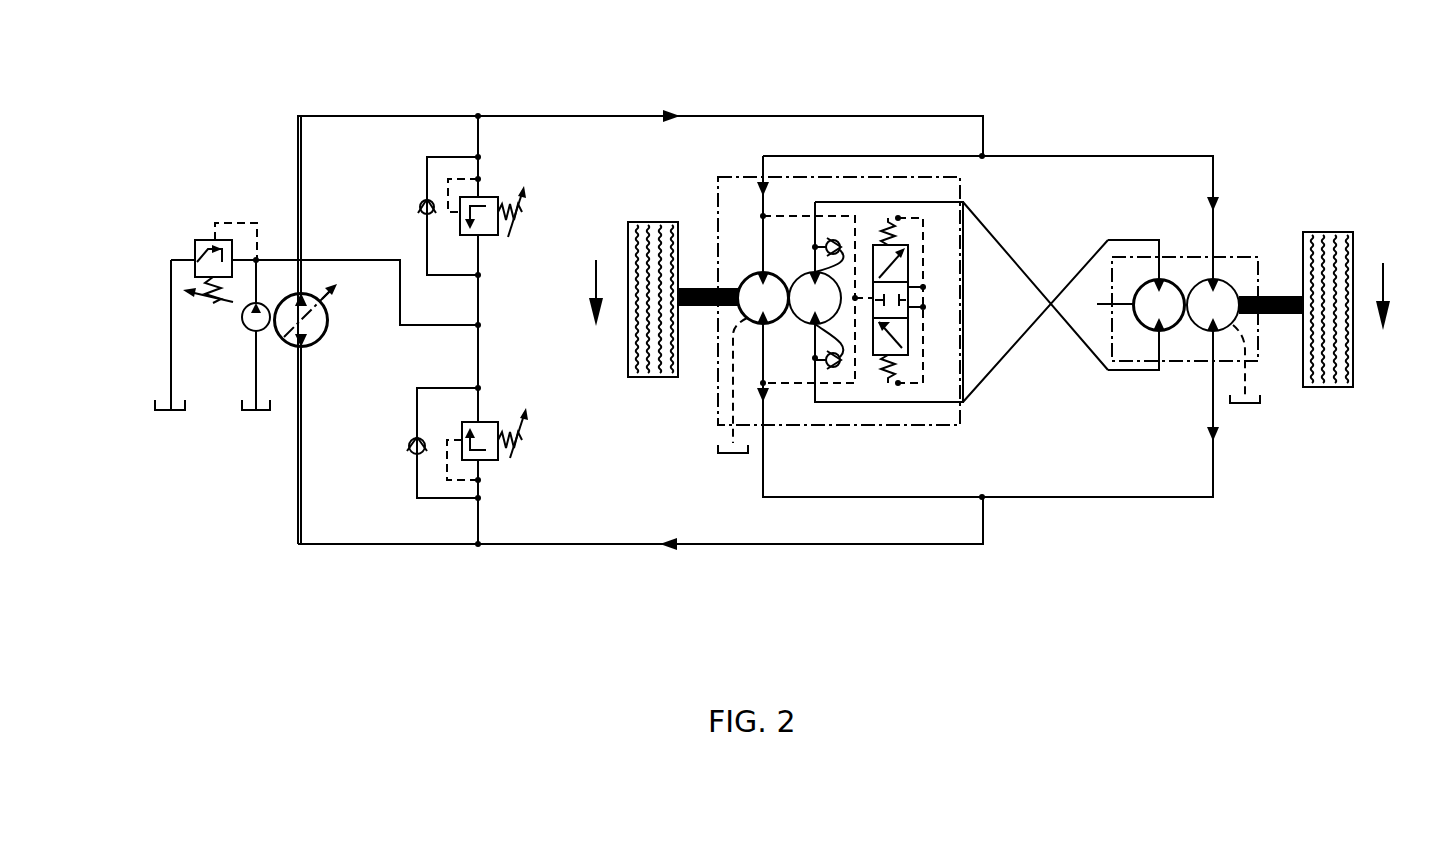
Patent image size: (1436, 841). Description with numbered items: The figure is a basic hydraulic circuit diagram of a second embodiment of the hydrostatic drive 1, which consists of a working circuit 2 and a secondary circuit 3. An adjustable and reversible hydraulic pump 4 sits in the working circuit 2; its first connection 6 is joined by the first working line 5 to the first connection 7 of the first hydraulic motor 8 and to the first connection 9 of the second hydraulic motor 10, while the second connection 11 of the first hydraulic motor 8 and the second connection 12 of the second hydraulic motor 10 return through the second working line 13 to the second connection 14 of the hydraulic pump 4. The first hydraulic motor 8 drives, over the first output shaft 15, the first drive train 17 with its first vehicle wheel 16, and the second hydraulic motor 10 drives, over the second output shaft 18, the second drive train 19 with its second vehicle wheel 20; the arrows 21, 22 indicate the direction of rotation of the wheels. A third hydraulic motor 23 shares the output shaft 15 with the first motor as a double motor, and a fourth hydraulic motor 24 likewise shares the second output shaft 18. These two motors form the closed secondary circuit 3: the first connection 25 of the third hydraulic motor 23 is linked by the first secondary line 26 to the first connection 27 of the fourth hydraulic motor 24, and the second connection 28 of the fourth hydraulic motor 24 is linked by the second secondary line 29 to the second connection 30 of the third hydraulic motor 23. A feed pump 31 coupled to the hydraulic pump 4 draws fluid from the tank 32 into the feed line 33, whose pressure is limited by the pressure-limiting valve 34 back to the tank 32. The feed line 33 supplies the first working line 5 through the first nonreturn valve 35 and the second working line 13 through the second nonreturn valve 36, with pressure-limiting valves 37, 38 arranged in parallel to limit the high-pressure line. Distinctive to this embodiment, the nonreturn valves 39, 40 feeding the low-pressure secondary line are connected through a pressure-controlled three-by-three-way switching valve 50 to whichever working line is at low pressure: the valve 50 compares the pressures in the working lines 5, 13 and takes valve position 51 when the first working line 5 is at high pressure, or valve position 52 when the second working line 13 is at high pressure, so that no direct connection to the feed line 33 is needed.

The hydrostatic drive 1 is at (711, 92).
The working circuit 2 is at (433, 108).
The secondary circuit 3 is at (1046, 247).
The hydraulic pump 4 is at (320, 327).
The first working line 5 is at (828, 115).
The first connection of the hydraulic pump 6 is at (300, 290).
The first connection of the first hydraulic motor 7 is at (762, 272).
The first hydraulic motor 8 is at (752, 302).
The first connection of the second hydraulic motor 9 is at (1215, 296).
The second hydraulic motor 10 is at (1218, 298).
The second connection of the first hydraulic motor 11 is at (767, 327).
The second connection of the second hydraulic motor 12 is at (1212, 333).
The second working line 13 is at (752, 547).
The second connection of the hydraulic pump 14 is at (300, 348).
The first output shaft 15 is at (698, 287).
The first vehicle wheel 16 is at (660, 222).
The first drive train 17 is at (632, 205).
The second output shaft 18 is at (1278, 317).
The second drive train 19 is at (1343, 210).
The second vehicle wheel 20 is at (1315, 242).
The arrow 21 is at (595, 282).
The arrow 22 is at (1383, 290).
The third hydraulic motor 23 is at (807, 292).
The fourth hydraulic motor 24 is at (1105, 305).
The first connection of the third hydraulic motor 25 is at (853, 248).
The first secondary line 26 is at (1132, 373).
The first connection of the fourth hydraulic motor 27 is at (1158, 328).
The second connection of the fourth hydraulic motor 28 is at (1160, 270).
The second secondary line 29 is at (1108, 240).
The second connection of the third hydraulic motor 30 is at (850, 357).
The feed pump 31 is at (250, 327).
The tank 32 is at (170, 420).
The feed line 33 is at (400, 295).
The pressure-limiting valve 34 is at (202, 258).
The first nonreturn valve 35 is at (421, 200).
The second nonreturn valve 36 is at (413, 452).
The pressure-limiting valve 37 is at (487, 223).
The pressure-limiting valve 38 is at (493, 453).
The nonreturn valve 39 is at (830, 241).
The nonreturn valve 40 is at (825, 370).
The 3/3-way switching valve 50 is at (910, 298).
The valve position 51 is at (910, 270).
The valve position 52 is at (900, 349).